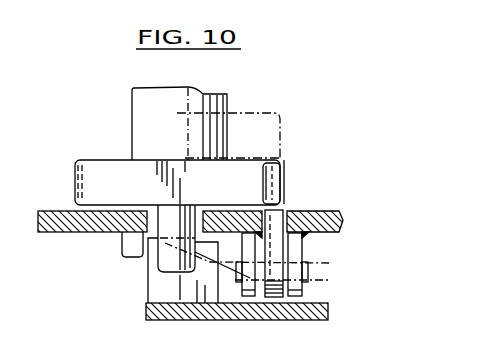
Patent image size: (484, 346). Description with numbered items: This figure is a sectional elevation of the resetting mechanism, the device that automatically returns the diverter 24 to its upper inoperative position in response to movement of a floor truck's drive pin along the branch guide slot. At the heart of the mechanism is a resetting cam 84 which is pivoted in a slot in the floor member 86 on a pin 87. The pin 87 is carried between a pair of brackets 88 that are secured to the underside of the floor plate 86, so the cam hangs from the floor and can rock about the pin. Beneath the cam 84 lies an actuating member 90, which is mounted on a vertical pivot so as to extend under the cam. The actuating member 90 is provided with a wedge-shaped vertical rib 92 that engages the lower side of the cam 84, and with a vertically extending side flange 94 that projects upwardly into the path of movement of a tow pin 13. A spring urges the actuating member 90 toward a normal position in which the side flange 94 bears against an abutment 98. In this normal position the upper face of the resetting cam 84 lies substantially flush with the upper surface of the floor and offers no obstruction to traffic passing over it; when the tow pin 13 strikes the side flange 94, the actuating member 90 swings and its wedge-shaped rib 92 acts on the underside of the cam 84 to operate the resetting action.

The diverter 24 is at (68, 188).
The resetting cam 84 is at (287, 170).
The floor member 86 is at (327, 213).
The pin 87 is at (308, 273).
The brackets 88 is at (252, 292).
The actuating member 90 is at (175, 310).
The wedge-shaped vertical rib 92 is at (305, 299).
The side flange 94 is at (157, 284).
The abutment 98 is at (122, 245).
The tow pin 13 is at (158, 257).